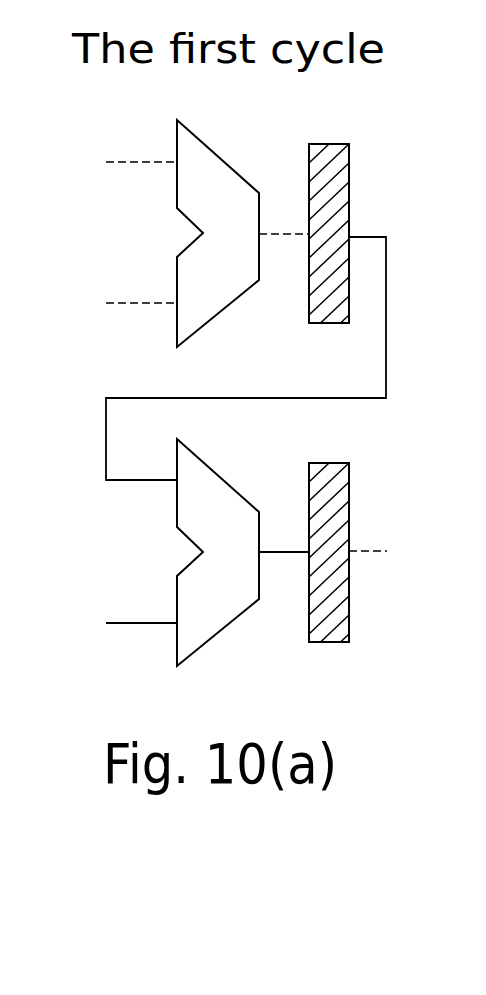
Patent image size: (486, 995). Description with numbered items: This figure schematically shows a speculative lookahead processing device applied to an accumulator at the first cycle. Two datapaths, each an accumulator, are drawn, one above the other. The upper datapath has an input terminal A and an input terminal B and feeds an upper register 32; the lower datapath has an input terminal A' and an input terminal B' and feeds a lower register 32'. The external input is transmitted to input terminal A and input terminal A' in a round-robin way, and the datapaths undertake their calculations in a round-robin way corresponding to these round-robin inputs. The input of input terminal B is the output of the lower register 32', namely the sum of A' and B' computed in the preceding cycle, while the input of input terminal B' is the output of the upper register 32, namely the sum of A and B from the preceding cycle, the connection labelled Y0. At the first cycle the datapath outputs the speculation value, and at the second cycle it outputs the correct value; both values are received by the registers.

The upper register 32 is at (373, 248).
The lower register 32' is at (377, 567).
The input terminal A is at (117, 162).
The input terminal B is at (117, 304).
The input terminal A' is at (117, 623).
The input terminal B' is at (117, 478).
The output signal Y0 is at (269, 324).